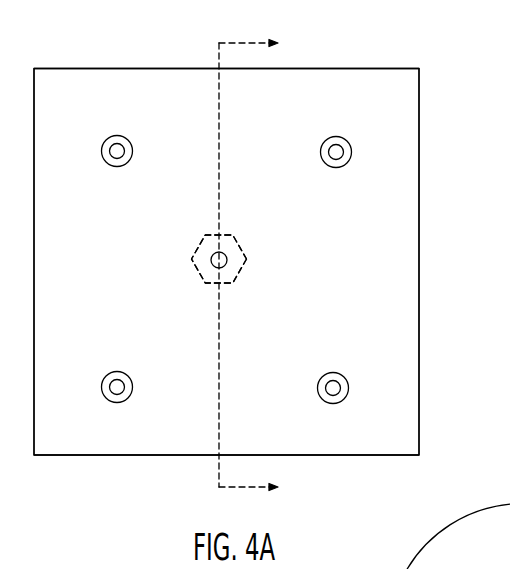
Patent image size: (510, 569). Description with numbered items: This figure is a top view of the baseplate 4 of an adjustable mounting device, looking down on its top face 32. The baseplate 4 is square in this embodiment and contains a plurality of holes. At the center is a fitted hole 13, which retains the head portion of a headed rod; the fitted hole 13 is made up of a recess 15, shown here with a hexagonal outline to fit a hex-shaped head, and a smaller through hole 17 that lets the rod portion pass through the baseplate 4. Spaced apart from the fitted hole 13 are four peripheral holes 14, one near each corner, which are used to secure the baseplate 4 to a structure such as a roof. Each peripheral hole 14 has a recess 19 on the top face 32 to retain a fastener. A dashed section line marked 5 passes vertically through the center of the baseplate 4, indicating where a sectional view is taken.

The baseplate 4 is at (435, 73).
The section line 5- 5 is at (258, 265).
The fitted hole 13 is at (250, 240).
The peripheral holes 14 is at (343, 154).
The recess 15 is at (237, 277).
The through hole 17 is at (227, 259).
The recess 19 is at (342, 137).
The top face 32 is at (355, 350).